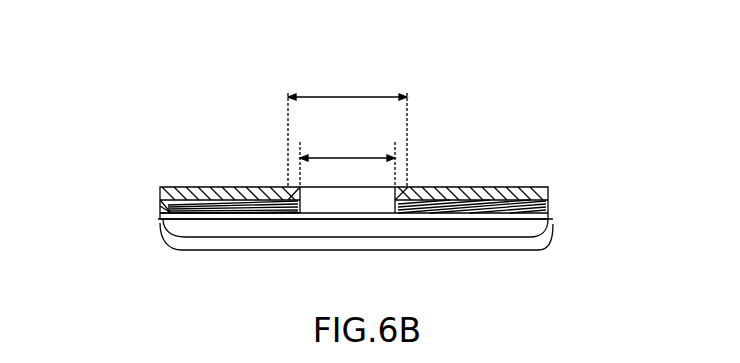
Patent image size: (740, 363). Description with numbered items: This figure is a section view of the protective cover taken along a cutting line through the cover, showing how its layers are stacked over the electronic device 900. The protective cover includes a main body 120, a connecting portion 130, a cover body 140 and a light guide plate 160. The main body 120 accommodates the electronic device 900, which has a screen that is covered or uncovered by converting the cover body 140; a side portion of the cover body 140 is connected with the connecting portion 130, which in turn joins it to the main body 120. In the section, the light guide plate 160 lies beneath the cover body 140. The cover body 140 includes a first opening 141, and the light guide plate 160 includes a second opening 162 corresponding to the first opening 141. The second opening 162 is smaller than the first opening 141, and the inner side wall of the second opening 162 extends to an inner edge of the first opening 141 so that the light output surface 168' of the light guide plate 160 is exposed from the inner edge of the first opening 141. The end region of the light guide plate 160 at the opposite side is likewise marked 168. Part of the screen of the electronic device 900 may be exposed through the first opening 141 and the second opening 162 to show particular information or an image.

The main body 120 is at (168, 244).
The connecting portion 130 is at (158, 207).
The cover body 140 is at (210, 188).
The first opening 141 is at (347, 129).
The light guide plate 160 is at (541, 191).
The second opening 162 is at (347, 157).
The slanted end portion 168 is at (510, 187).
The light output surface 168' is at (263, 152).
The electronic device 900 is at (522, 228).